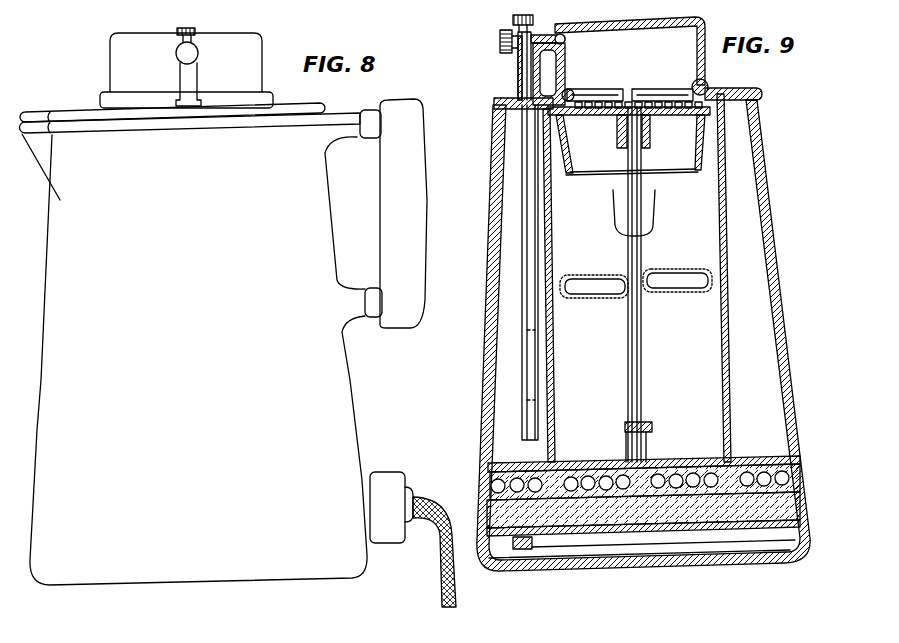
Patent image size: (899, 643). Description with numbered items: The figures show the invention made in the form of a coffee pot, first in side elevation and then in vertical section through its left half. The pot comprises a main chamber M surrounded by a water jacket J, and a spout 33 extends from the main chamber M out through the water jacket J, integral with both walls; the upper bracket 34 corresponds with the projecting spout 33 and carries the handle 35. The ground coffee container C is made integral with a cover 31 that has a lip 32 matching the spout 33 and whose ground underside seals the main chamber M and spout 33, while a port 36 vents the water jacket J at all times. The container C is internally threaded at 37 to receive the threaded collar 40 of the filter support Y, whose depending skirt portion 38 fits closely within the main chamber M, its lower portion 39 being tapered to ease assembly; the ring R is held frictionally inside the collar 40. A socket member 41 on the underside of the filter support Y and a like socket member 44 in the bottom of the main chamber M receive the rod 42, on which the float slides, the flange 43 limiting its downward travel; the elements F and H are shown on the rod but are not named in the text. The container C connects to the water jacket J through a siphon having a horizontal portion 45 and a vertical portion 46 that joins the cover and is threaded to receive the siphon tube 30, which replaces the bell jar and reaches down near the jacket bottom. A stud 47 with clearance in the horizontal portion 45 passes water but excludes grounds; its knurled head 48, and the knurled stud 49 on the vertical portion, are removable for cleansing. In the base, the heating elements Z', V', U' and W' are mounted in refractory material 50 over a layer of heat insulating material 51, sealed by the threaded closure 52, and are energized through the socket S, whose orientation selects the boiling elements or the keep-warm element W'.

In FIG. 9, the siphon tube 30 is at (522, 277).
In FIG. 8, the cover 31 is at (78, 108).
In FIG. 9, the cover 31 is at (497, 104).
In FIG. 8, the lip 32 is at (32, 114).
In FIG. 8, the spout 33 is at (30, 157).
In FIG. 9, the spout 33 is at (620, 210).
In FIG. 8, the upper bracket 34 is at (357, 138).
In FIG. 8, the handle 35 is at (393, 218).
In FIG. 9, the port 36 is at (740, 88).
In FIG. 9, the internal thread 37 is at (716, 90).
In FIG. 9, the depending skirt portion 38 is at (720, 113).
In FIG. 9, the lower portion of skirt 39 is at (704, 172).
In FIG. 9, the threaded collar 40 is at (695, 83).
In FIG. 9, the socket member 41 is at (618, 135).
In FIG. 9, the rod 42 is at (632, 365).
In FIG. 9, the flange 43 is at (630, 418).
In FIG. 9, the socket member 44 is at (627, 437).
In FIG. 9, the horizontal portion of siphon 45 is at (549, 74).
In FIG. 8, the vertical portion of siphon 46 is at (197, 78).
In FIG. 9, the vertical portion of siphon 46 is at (517, 70).
In FIG. 9, the stud 47 is at (567, 40).
In FIG. 8, the knurled head 48 is at (176, 57).
In FIG. 9, the knurled head 48 is at (500, 42).
In FIG. 8, the knurled stud 49 is at (197, 33).
In FIG. 9, the knurled stud 49 is at (510, 20).
In FIG. 9, the refractory material 50 is at (523, 472).
In FIG. 9, the heat insulating material 51 is at (503, 523).
In FIG. 9, the threaded closure 52 is at (645, 535).
In FIG. 8, the ground coffee container C is at (110, 62).
In FIG. 9, the ground coffee container C is at (697, 50).
In FIG. 8, the socket S is at (385, 470).
In FIG. 9, the water jacket J is at (773, 318).
In FIG. 9, the main chamber M is at (718, 355).
In FIG. 9, the ring R is at (618, 93).
In FIG. 9, the filter support Y is at (680, 113).
In FIG. 9, the paddle F is at (598, 274).
In FIG. 9, the paddle H is at (652, 268).
In FIG. 9, the heating element U' is at (761, 432).
In FIG. 9, the heating element V' is at (744, 447).
In FIG. 9, the heating element W' is at (776, 447).
In FIG. 9, the heating element Z' is at (645, 458).